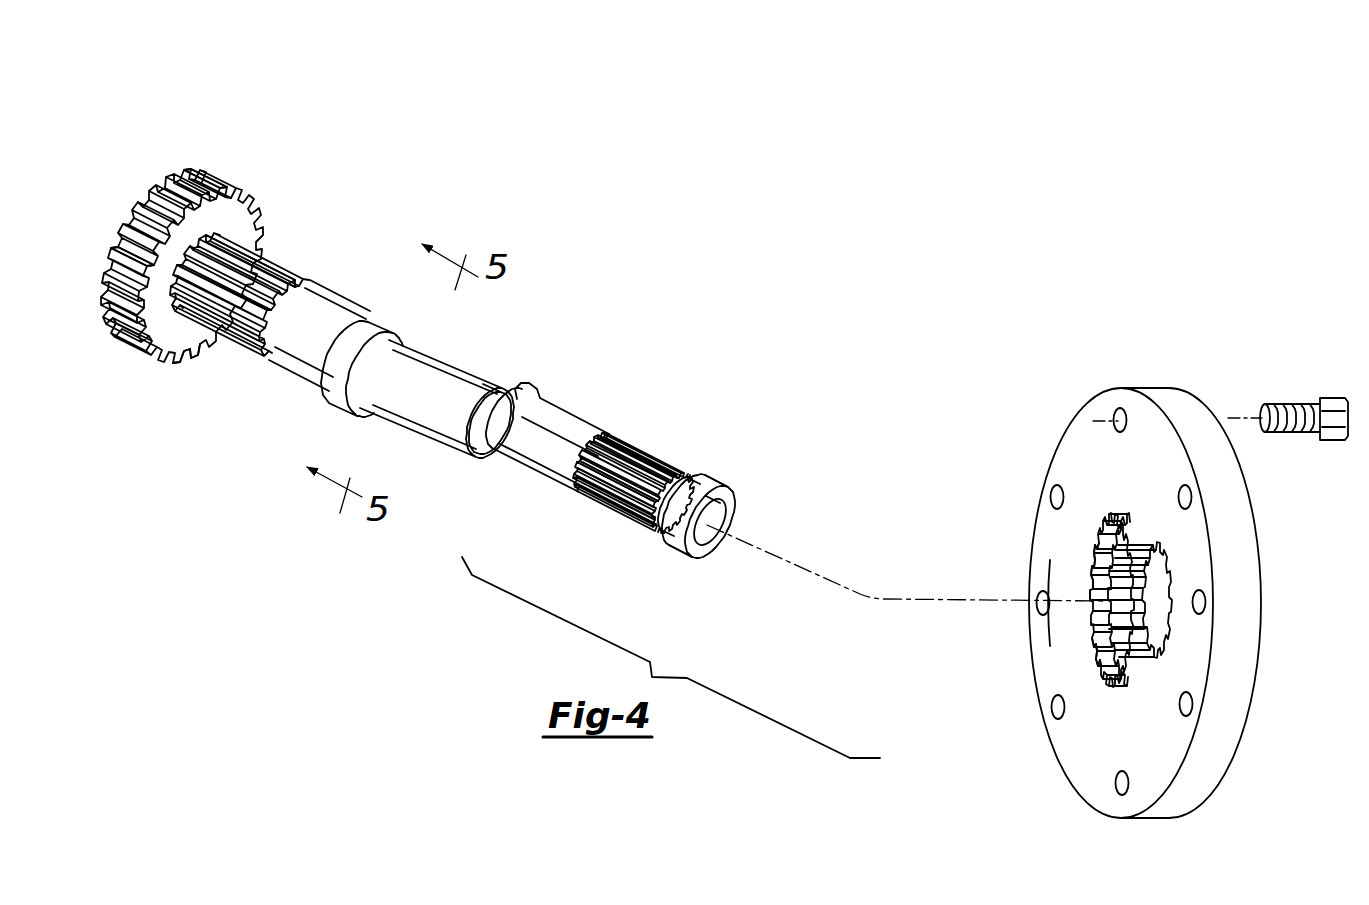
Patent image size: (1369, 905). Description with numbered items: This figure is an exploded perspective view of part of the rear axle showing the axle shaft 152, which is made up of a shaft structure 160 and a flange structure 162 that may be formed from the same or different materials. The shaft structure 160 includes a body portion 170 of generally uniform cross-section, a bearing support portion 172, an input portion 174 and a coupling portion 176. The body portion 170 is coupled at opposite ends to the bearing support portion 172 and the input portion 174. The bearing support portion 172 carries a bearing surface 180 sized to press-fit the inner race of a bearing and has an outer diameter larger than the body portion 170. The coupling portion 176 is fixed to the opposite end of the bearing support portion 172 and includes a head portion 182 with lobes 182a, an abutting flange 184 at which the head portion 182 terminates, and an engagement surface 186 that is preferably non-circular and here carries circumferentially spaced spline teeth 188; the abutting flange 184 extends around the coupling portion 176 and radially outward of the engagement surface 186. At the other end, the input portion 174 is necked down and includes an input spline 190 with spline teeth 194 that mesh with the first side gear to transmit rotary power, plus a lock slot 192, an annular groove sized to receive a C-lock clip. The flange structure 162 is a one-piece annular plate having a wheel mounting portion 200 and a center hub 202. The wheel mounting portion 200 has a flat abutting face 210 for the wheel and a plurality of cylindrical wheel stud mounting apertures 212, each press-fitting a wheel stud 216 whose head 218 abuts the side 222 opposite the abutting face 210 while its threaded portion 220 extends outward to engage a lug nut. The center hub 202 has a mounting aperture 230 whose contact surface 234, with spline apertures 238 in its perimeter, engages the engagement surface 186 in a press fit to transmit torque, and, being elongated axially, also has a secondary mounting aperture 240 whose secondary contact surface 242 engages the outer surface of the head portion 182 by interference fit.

The axle shaft 152 is at (718, 390).
The shaft structure 160 is at (493, 357).
The flange structure 162 is at (1113, 348).
The body portion 170 is at (434, 434).
The bearing support portion 172 is at (303, 374).
The input portion 174 is at (650, 440).
The coupling portion 176 is at (298, 243).
The bearing surface 180 is at (320, 399).
The head portion 182 is at (151, 181).
The lobes 182a is at (205, 183).
The abutting flange 184 is at (188, 363).
The engagement surface 186 is at (282, 323).
The spline teeth 188 is at (234, 250).
The input spline 190 is at (597, 524).
The lock slot 192 is at (651, 548).
The spline teeth 194 is at (580, 482).
The wheel mounting portion 200 is at (1273, 583).
The center hub 202 is at (1115, 646).
The abutting face 210 is at (1090, 762).
The wheel stud mounting apertures 212 is at (1187, 707).
The wheel stud 216 is at (1277, 385).
The head 218 is at (1340, 399).
The threaded portion 220 is at (1305, 434).
The side 222 is at (1262, 677).
The mounting aperture 230 is at (1122, 586).
The contact surface 234 is at (1144, 621).
The spline apertures 238 is at (1151, 577).
The secondary mounting aperture 240 is at (1126, 660).
The secondary contact surface 242 is at (1108, 616).